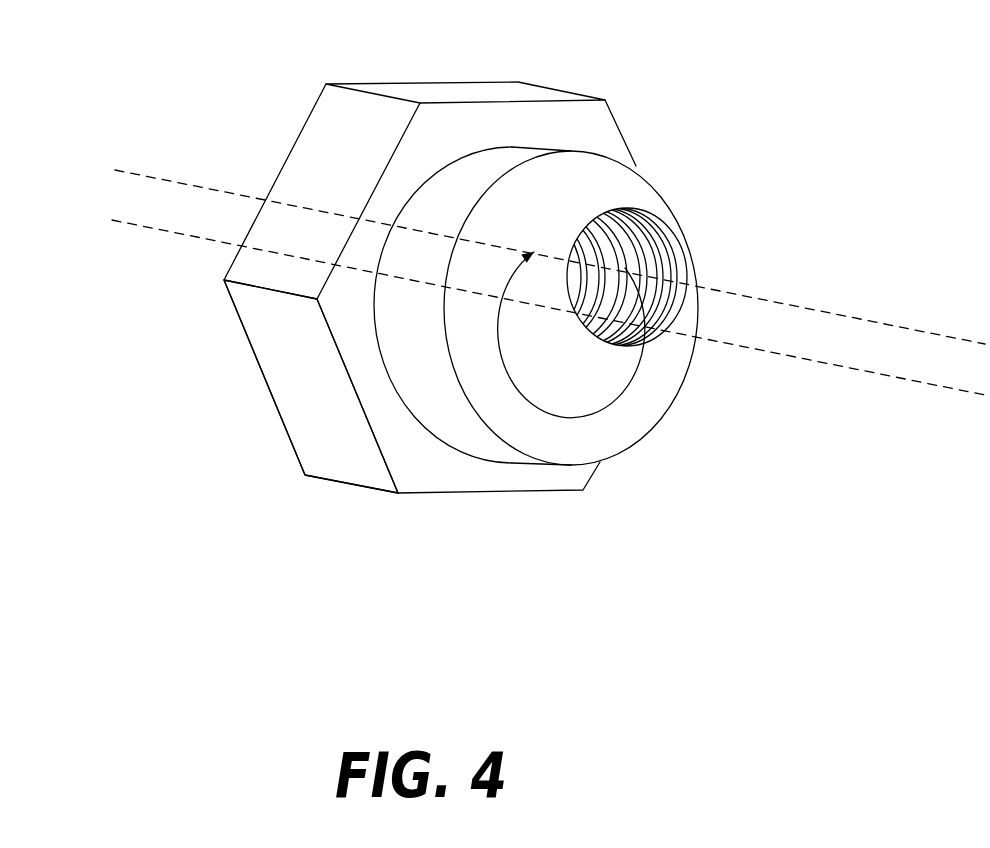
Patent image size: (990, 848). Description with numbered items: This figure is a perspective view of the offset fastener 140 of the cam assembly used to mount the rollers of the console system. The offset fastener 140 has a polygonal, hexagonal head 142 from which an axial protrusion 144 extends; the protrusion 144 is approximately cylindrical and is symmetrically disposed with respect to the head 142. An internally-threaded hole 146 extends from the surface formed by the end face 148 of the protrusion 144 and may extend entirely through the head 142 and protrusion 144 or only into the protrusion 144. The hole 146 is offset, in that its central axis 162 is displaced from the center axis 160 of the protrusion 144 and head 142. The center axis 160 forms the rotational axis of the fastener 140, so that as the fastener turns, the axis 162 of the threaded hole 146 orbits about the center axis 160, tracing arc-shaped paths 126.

The offset fastener 140 is at (327, 83).
The head 142 is at (298, 414).
The axial protrusion 144 is at (452, 428).
The end face 148 is at (583, 443).
The arc-shaped paths 126 is at (610, 403).
The internally-threaded hole 146 is at (680, 240).
The central axis of hole 162 is at (823, 312).
The center axis 160 is at (870, 372).